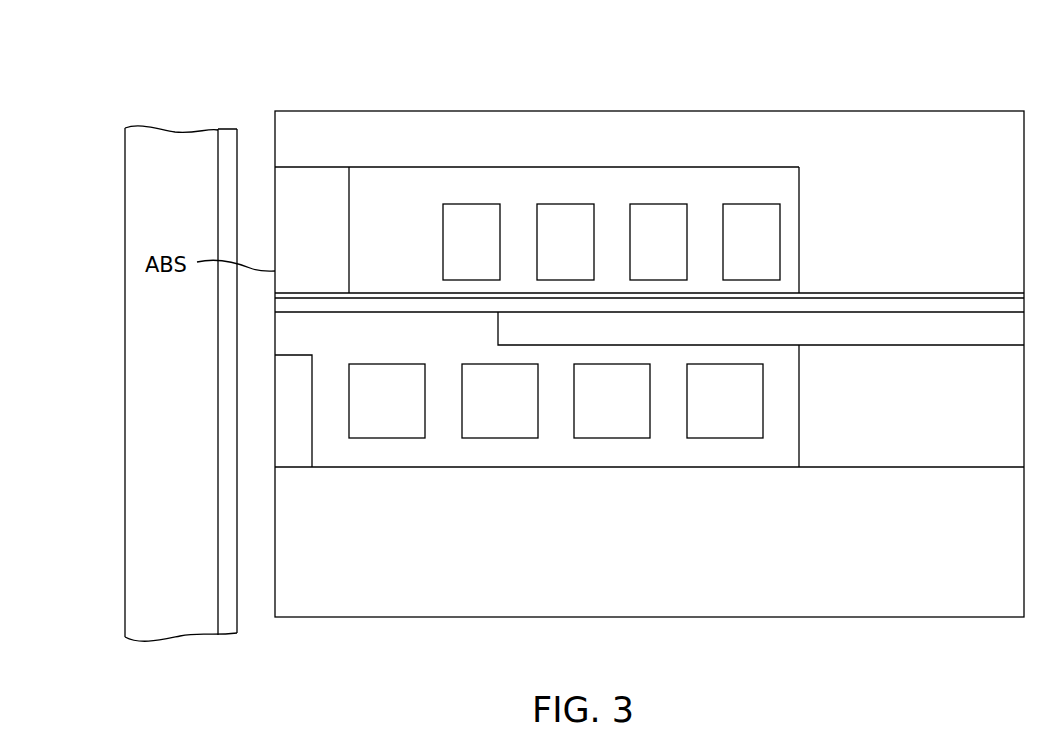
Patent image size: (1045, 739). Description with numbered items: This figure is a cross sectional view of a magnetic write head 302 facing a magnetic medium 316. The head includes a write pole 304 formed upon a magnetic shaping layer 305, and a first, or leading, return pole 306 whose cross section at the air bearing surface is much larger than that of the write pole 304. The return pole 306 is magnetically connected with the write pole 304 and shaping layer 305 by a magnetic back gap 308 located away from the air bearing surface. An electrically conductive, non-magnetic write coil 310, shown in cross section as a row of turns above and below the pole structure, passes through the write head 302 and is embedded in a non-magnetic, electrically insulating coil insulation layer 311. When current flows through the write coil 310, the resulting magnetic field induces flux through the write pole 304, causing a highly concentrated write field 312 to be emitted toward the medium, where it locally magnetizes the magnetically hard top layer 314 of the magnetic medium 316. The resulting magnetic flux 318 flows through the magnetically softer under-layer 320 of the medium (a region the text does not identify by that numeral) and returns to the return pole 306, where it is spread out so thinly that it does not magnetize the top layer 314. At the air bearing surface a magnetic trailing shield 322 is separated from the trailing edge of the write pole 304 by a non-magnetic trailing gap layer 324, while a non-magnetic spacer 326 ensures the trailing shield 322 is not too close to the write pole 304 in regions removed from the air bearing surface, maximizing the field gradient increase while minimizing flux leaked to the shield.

The magnetic write head 302 is at (717, 111).
The write pole 304 is at (799, 307).
The magnetic shaping layer 305 is at (683, 330).
The leading return pole 306 is at (649, 512).
The magnetic back gap 308 is at (849, 406).
The write coil 310 is at (564, 321).
The coil insulation layer 311 is at (707, 196).
The write field 312 is at (240, 307).
The magnetically hard top layer 314 is at (228, 158).
The magnetic medium 316 is at (143, 92).
The magnetic flux 318 is at (200, 308).
The medium substrate 320 is at (160, 188).
The magnetic trailing shield 322 is at (350, 194).
The non-magnetic trailing gap layer 324 is at (616, 139).
The non-magnetic spacer 326 is at (430, 296).